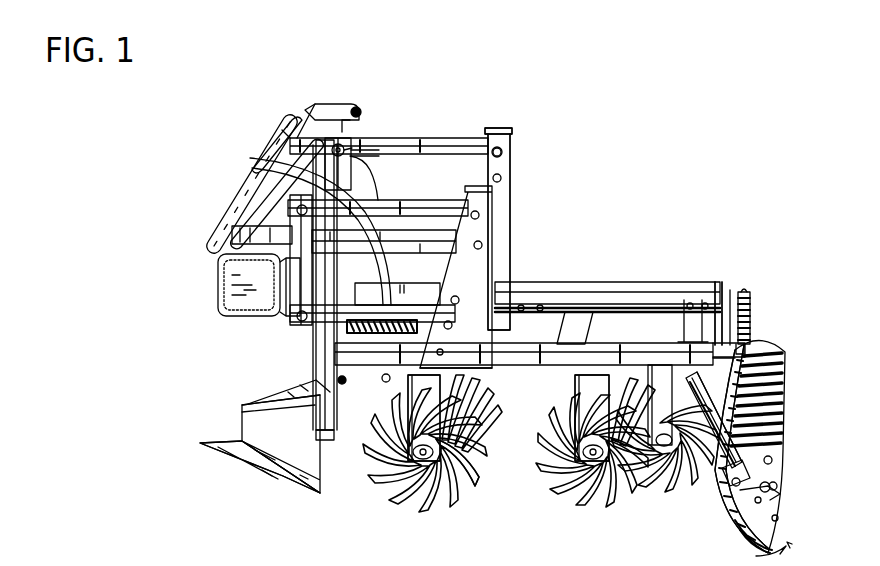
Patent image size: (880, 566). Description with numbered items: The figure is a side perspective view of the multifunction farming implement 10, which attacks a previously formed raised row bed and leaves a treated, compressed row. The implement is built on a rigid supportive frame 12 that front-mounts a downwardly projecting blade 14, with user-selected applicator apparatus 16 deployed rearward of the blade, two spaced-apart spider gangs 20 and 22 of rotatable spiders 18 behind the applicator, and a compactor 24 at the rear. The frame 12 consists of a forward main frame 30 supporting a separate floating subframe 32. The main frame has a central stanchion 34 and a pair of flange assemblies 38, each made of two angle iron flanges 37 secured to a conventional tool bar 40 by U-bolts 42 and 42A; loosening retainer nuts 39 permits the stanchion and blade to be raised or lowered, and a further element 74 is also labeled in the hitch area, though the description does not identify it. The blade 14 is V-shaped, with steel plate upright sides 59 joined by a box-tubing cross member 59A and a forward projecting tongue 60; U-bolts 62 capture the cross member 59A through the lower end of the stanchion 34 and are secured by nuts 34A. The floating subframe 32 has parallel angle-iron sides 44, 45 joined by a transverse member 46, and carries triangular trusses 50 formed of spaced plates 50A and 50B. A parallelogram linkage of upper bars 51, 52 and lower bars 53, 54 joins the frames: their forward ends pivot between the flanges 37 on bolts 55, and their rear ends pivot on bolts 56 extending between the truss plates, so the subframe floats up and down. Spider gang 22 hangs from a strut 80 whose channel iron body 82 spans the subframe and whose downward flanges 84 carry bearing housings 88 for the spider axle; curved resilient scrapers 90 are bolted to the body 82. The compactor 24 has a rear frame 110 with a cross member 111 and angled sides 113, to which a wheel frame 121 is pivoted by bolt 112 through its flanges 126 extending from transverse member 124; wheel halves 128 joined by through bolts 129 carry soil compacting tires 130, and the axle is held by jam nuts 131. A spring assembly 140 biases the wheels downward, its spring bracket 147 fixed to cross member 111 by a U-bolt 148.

The multifunction farming implement 10 is at (530, 94).
The frame 12 is at (569, 219).
The blade 14 is at (249, 485).
The applicator apparatus 16 is at (387, 389).
The spider 18 is at (464, 476).
The spider gang 20 is at (397, 511).
The spider gang 22 is at (594, 518).
The compactor 24 is at (707, 517).
The forward main frame 30 is at (270, 346).
The floating subframe 32 is at (616, 288).
The central stanchion 34 is at (312, 380).
The nuts 34A is at (322, 448).
The angle iron flanges 37 is at (288, 320).
The flange assembly 38 is at (354, 114).
The retainer nuts 39 is at (348, 195).
The tool bar 40 is at (340, 116).
The U-bolts 42 is at (308, 123).
The U-bolt 42A is at (270, 167).
The side 44 is at (562, 283).
The side 45 is at (544, 376).
The transverse member 46 is at (342, 382).
The truss 50 is at (534, 216).
The truss plate 50A is at (470, 137).
The truss plate 50B is at (507, 136).
The upper linkage bar 51 is at (416, 139).
The upper linkage bar 52 is at (407, 208).
The lower linkage bar 53 is at (400, 250).
The lower linkage bar 54 is at (340, 304).
The bolts 55 is at (362, 141).
The bolts 56 is at (508, 156).
The upright sides 59 is at (279, 470).
The cross member 59A is at (262, 414).
The forward projecting tongue 60 is at (222, 462).
The U-bolts 62 is at (300, 391).
The pin 74 is at (282, 146).
The strut 80 is at (576, 302).
The channel iron body portion 82 is at (629, 304).
The flanges 84 is at (560, 468).
The bearing housing 88 is at (599, 509).
The scrapers 90 is at (662, 308).
The rear frame 110 is at (703, 457).
The cross member 111 is at (719, 417).
The bolt 112 is at (716, 482).
The rear frame sides 113 is at (701, 424).
The wheel frame 121 is at (758, 340).
The transverse member 124 is at (762, 364).
The flanges 126 is at (746, 514).
The wheel halves 128 is at (766, 446).
The through bolts 129 is at (766, 472).
The tires 130 is at (766, 402).
The jam nuts 131 is at (776, 492).
The spring assembly 140 is at (756, 290).
The spring bracket 147 is at (750, 316).
The U-bolt 148 is at (718, 282).